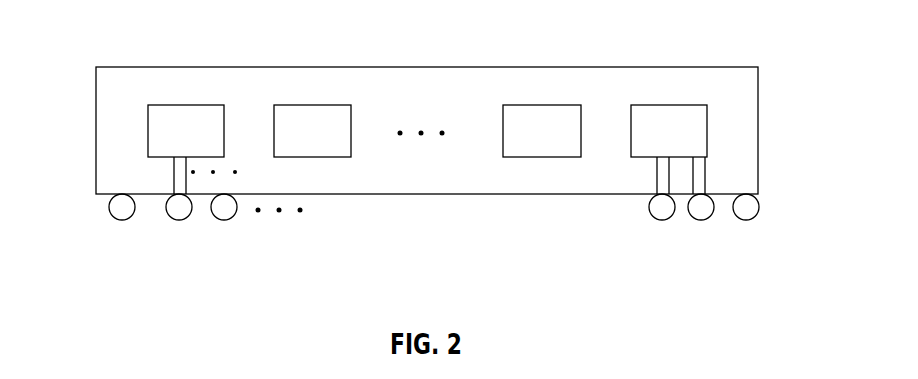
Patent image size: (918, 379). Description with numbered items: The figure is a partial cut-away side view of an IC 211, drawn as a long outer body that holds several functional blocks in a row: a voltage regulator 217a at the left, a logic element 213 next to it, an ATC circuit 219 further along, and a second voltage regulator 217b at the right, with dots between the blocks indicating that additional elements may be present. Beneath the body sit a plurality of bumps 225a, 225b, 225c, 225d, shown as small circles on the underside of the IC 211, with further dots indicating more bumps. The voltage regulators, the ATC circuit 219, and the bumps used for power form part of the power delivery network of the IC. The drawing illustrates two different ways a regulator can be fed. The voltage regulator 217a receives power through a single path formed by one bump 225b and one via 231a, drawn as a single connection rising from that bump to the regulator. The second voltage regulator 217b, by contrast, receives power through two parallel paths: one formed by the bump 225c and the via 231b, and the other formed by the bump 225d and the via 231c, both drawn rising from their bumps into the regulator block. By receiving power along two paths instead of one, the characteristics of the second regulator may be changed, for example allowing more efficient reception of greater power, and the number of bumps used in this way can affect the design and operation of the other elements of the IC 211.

The IC 211 is at (718, 66).
The logic element 213 is at (323, 104).
The voltage regulator 217a is at (182, 104).
The second voltage regulator 217b is at (710, 127).
The ATC circuit 219 is at (539, 104).
The bump 225a is at (118, 220).
The bump 225b is at (182, 220).
The bump 225c is at (655, 219).
The bump 225d is at (703, 219).
The via 231a is at (173, 181).
The via 231b is at (657, 180).
The via 231c is at (705, 180).